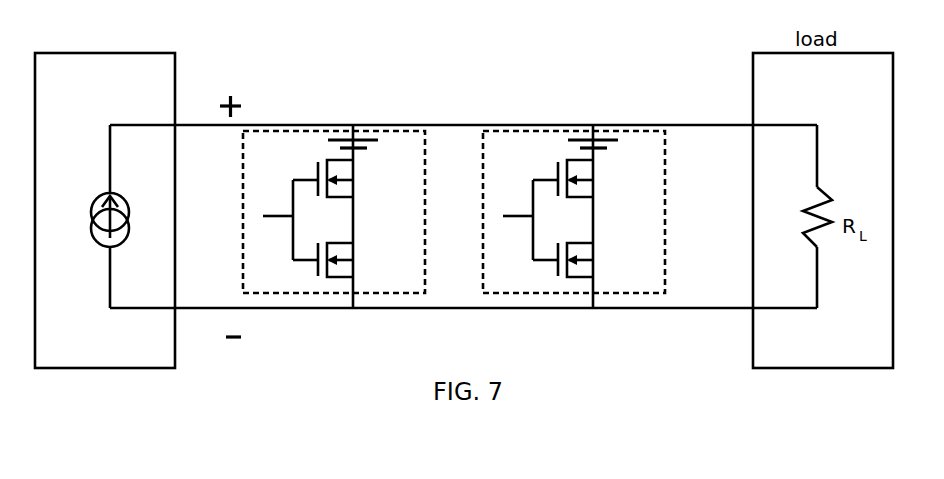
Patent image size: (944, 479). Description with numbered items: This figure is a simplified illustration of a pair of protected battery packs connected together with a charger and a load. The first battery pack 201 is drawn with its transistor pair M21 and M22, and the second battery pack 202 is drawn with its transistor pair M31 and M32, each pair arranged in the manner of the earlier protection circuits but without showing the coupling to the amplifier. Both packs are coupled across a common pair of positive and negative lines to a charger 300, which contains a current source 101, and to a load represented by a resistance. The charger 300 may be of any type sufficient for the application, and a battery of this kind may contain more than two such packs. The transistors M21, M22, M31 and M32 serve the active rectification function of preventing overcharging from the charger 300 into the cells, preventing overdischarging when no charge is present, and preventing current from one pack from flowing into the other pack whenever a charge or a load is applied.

The charger 300 is at (165, 53).
The current source 101 is at (90, 216).
The first battery pack 201 is at (334, 200).
The second battery pack 202 is at (574, 200).
The transistor M21 is at (348, 178).
The transistor M22 is at (348, 260).
The transistor M31 is at (588, 178).
The transistor M32 is at (588, 260).